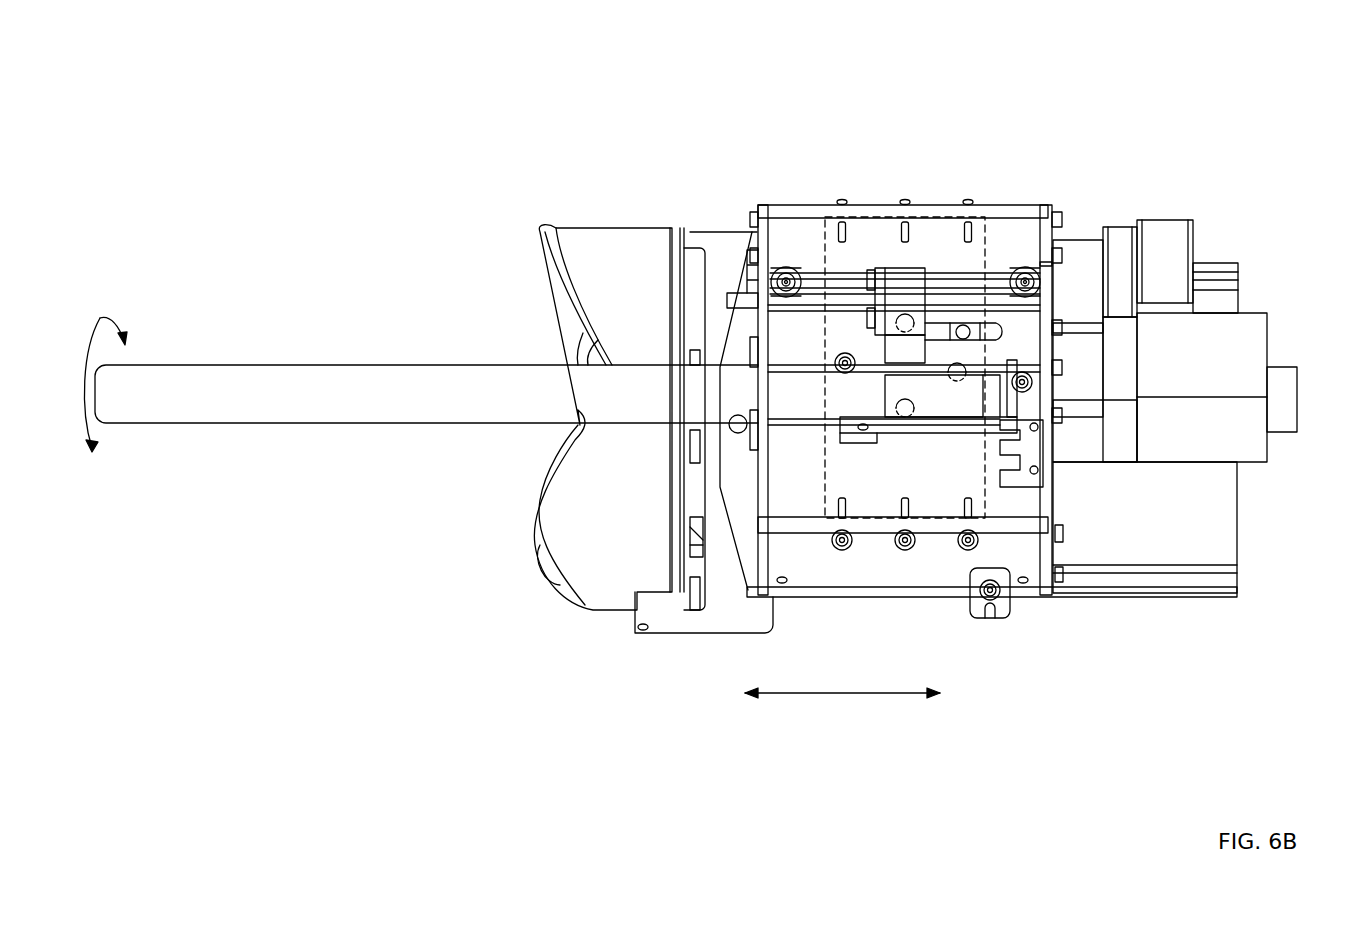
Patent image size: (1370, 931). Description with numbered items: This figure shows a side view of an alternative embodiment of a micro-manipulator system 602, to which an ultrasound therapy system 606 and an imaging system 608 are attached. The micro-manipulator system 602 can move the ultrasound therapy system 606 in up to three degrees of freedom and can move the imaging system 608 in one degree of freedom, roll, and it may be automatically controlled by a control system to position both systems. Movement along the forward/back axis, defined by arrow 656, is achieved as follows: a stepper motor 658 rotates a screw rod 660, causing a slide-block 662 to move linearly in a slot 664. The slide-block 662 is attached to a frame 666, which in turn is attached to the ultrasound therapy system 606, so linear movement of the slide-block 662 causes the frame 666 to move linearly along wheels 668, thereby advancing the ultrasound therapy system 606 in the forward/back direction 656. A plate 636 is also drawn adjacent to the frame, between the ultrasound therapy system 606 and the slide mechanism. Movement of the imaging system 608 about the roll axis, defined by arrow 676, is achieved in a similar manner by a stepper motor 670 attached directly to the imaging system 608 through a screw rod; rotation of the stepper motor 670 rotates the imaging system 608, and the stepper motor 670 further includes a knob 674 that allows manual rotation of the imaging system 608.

The micro-manipulator system 602 is at (997, 82).
The ultrasound therapy system 606 is at (603, 170).
The imaging system 608 is at (323, 396).
The mounting plate 636 is at (722, 252).
The arrow 656 is at (846, 693).
The stepper motor 658 is at (1165, 236).
The screw rod 660 is at (810, 298).
The slide-block 662 is at (903, 292).
The slot 664 is at (1000, 325).
The frame 666 is at (945, 572).
The wheels 668 is at (1030, 262).
The stepper motor 670 is at (1257, 326).
The knob 674 is at (1275, 366).
The arrow 676 is at (100, 318).